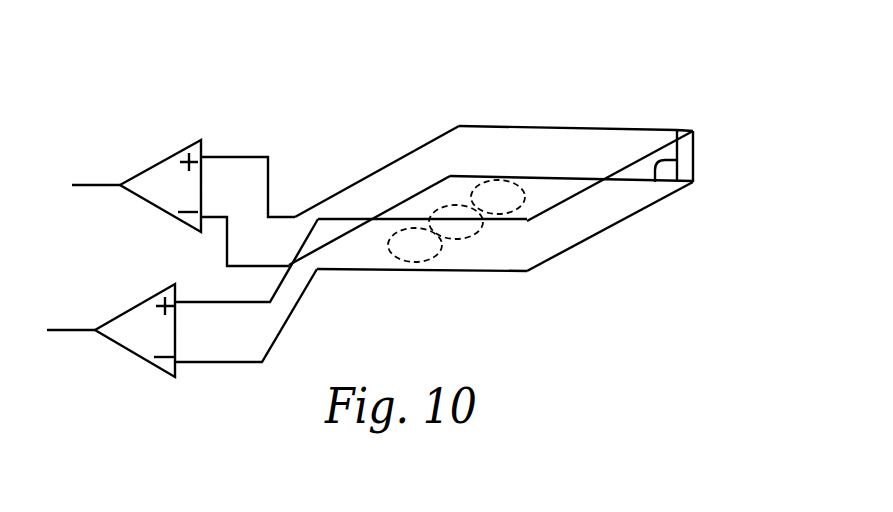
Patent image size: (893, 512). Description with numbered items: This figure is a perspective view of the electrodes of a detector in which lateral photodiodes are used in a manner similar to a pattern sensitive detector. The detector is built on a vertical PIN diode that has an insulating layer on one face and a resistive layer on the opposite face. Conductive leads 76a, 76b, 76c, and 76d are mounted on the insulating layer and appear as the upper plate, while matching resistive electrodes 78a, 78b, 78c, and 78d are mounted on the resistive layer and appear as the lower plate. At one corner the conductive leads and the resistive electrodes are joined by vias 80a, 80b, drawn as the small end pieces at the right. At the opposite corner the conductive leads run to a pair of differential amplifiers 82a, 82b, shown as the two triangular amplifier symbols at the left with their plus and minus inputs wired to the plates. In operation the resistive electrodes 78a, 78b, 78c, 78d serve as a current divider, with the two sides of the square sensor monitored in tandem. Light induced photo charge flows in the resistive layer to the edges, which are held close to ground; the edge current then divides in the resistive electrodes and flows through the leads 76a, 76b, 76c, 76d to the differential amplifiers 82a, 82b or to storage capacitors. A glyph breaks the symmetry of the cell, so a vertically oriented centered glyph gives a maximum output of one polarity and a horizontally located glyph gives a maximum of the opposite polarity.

The conductive lead 76a is at (416, 151).
The conductive lead 76b is at (508, 127).
The conductive lead 76c is at (585, 191).
The conductive lead 76d is at (457, 224).
The resistive electrode 78a is at (360, 221).
The resistive electrode 78b is at (578, 177).
The resistive electrode 78c is at (545, 264).
The resistive electrode 78d is at (372, 272).
The via 80a is at (656, 184).
The via 80b is at (694, 155).
The differential amplifier 82a is at (159, 162).
The differential amplifier 82b is at (133, 352).